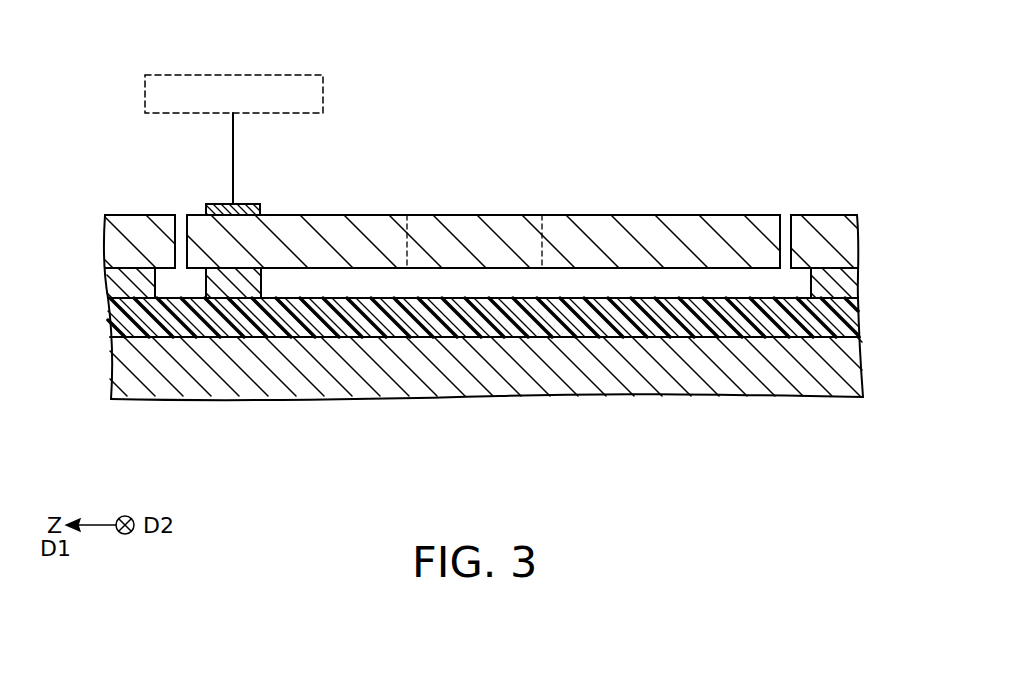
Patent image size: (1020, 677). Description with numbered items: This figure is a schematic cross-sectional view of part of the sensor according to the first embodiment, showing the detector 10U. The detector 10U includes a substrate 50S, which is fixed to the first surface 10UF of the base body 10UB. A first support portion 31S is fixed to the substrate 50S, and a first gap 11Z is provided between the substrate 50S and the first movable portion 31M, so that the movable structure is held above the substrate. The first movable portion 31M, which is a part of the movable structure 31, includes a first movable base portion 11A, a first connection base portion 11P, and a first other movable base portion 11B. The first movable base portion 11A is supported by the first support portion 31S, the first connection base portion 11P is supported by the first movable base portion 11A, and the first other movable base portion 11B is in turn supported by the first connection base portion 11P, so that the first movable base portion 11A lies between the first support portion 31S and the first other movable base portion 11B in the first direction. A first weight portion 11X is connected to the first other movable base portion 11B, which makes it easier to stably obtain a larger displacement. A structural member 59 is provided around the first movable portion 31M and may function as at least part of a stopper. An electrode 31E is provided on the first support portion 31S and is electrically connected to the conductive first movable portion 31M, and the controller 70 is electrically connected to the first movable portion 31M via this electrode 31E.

The detector 10U is at (776, 119).
The base body 10UB is at (822, 378).
The first surface 10UF is at (141, 326).
The substrate 50S is at (858, 321).
The structural member 59 is at (144, 221).
The wiring member 31 is at (477, 264).
The first movable portion 31M is at (532, 228).
The electrode 31E is at (217, 208).
The first support portion 31S is at (228, 285).
The first movable base portion 11A is at (327, 232).
The first connection base portion 11P is at (408, 215).
The first other movable base portion 11B is at (486, 230).
The first weight portion 11X is at (673, 233).
The first gap 11Z is at (498, 282).
The controller 70 is at (323, 98).